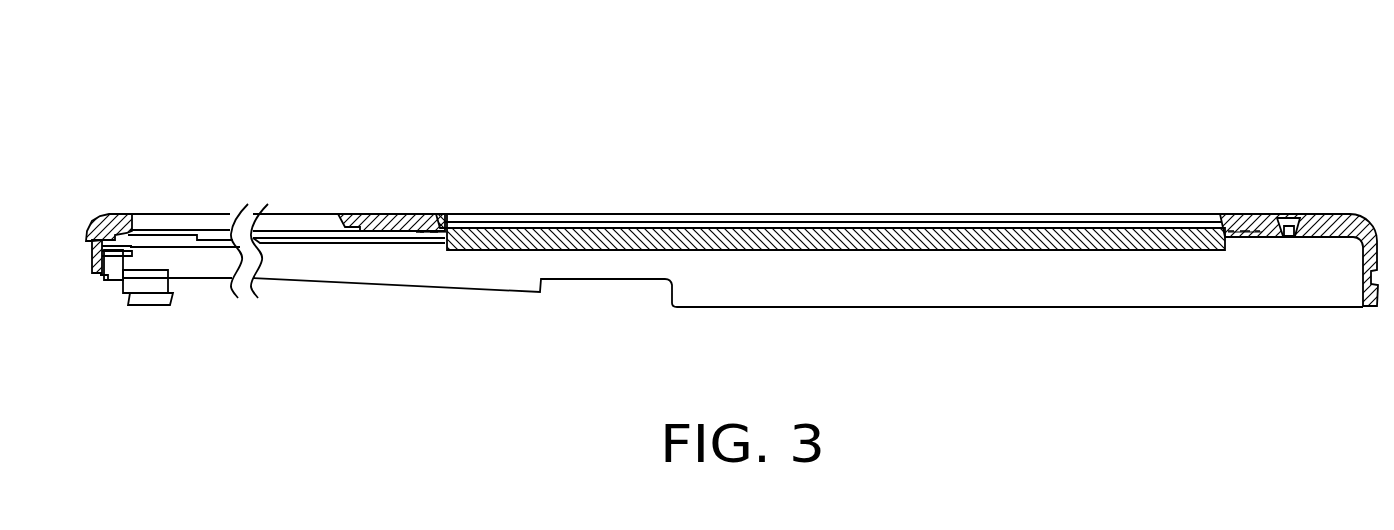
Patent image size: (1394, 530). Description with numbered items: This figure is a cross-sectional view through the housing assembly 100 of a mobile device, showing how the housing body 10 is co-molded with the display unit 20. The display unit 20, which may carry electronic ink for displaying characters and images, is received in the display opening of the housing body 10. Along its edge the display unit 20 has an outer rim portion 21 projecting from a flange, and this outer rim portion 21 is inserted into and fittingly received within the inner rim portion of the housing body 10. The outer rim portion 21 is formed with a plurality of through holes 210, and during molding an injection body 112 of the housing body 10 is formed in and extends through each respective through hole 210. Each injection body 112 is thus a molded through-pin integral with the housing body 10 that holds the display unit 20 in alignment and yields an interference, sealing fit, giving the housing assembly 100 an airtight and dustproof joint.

The housing assembly 100 is at (769, 53).
The housing body 10 is at (1326, 215).
The injection body 112 is at (430, 225).
The display unit 20 is at (521, 228).
The outer rim portion 21 is at (414, 214).
The through hole 210 is at (437, 215).